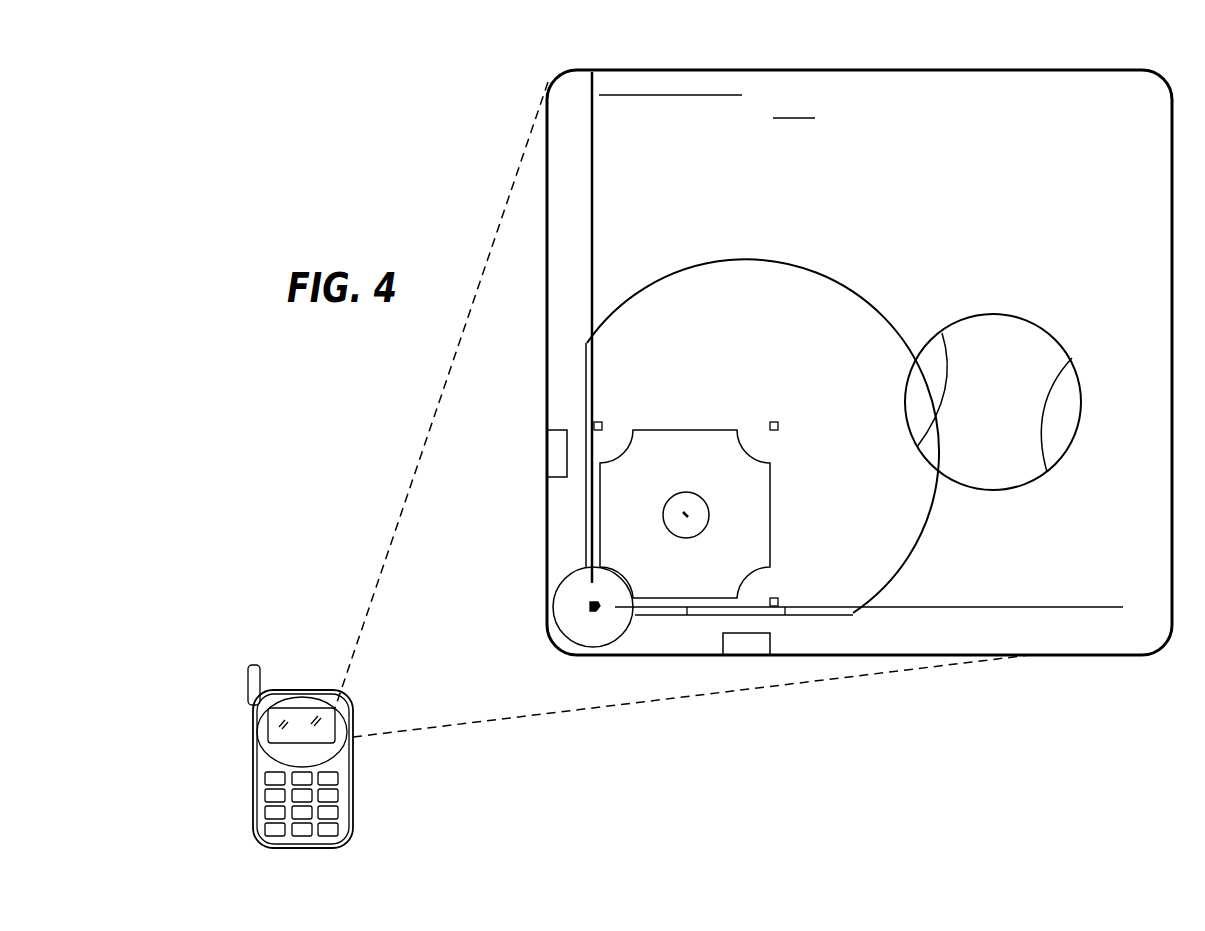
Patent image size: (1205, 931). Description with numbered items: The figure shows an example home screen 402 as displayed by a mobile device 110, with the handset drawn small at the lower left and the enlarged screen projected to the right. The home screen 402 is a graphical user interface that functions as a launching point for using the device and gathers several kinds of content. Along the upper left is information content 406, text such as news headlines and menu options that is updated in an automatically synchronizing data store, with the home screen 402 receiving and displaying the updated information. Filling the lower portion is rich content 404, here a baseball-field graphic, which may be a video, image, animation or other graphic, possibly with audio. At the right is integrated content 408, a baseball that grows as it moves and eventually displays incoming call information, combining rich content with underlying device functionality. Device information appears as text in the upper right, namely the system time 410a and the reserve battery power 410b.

The home screen 402 is at (548, 80).
The rich content 404 is at (887, 557).
The information content 406 is at (841, 123).
The integrated content 408 is at (1030, 319).
The system time 410a is at (1077, 108).
The reserve battery power 410b is at (1077, 191).
The mobile device 110 is at (280, 652).